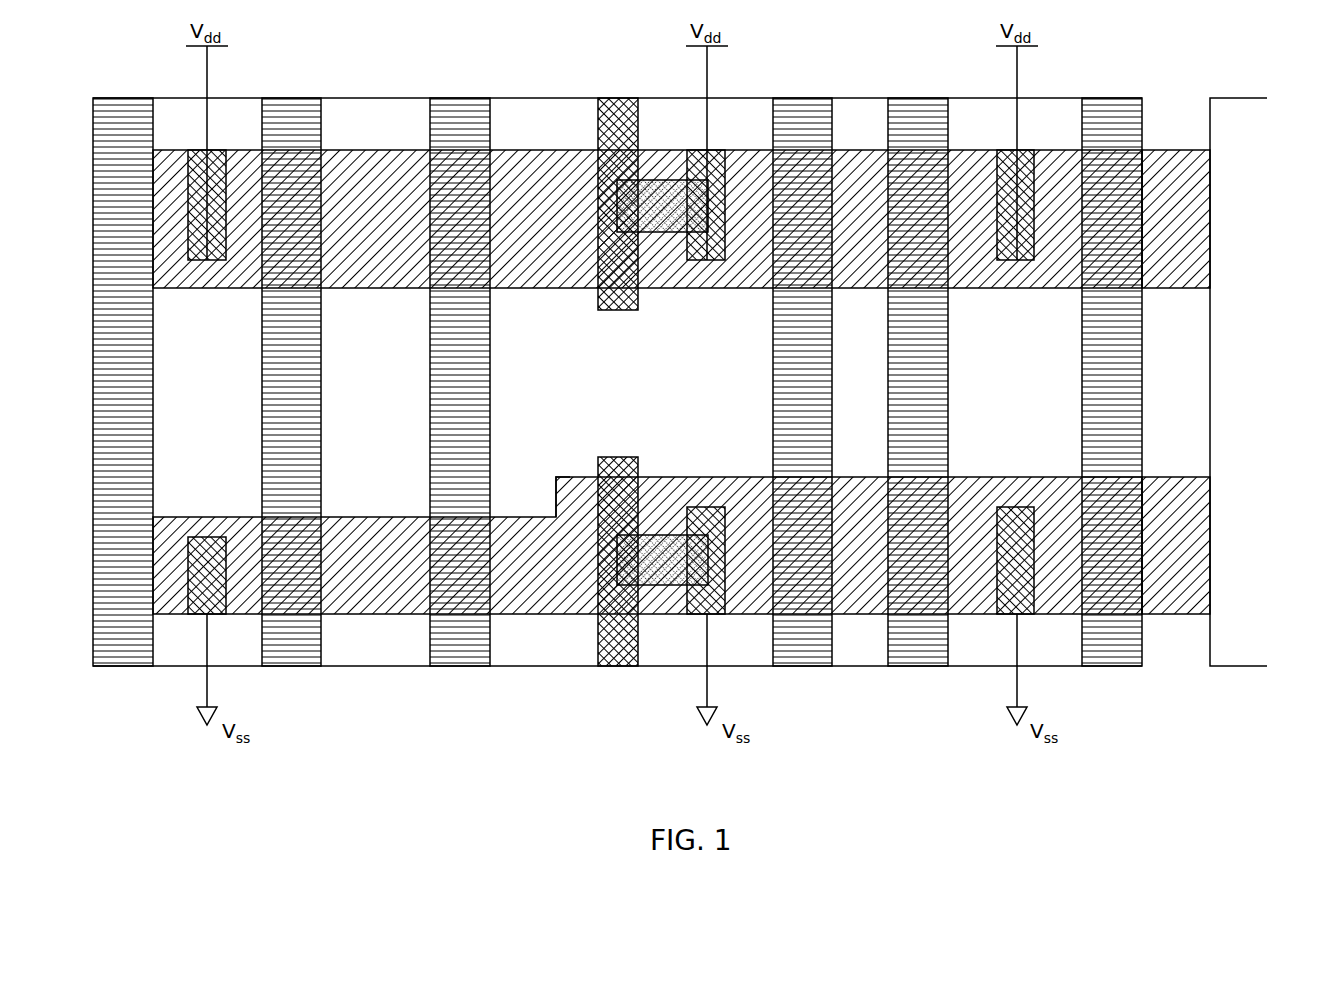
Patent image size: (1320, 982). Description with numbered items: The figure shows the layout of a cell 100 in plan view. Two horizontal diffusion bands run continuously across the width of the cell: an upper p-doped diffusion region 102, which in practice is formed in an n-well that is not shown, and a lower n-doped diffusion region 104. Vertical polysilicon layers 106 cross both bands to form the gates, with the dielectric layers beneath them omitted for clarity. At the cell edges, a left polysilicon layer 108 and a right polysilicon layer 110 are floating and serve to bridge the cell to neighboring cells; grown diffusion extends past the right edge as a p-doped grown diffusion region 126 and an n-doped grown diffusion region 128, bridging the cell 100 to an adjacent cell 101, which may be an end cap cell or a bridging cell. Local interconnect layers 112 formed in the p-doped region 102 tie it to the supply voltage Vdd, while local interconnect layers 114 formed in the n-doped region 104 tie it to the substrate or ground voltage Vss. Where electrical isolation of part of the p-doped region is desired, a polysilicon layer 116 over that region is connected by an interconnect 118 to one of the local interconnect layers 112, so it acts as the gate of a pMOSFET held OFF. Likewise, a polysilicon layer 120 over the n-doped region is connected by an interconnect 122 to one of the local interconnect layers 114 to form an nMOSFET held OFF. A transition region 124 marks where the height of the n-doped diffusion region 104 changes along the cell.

The cell 100 is at (72, 620).
The other cell 101 is at (1260, 620).
The p-doped diffusion region 102 is at (376, 148).
The n-doped diffusion region 104 is at (371, 616).
The polysilicon layers 106 is at (290, 97).
The left polysilicon layer 108 is at (122, 97).
The right polysilicon layer 110 is at (1112, 97).
The local interconnect layers 112 is at (208, 290).
The local interconnect layers 114 is at (207, 535).
The polysilicon layer 116 is at (620, 97).
The interconnect 118 is at (664, 234).
The polysilicon layer 120 is at (616, 668).
The interconnect 122 is at (661, 587).
The transition region 124 is at (554, 494).
The p-doped grown diffusion region 126 is at (1176, 149).
The n-doped grown diffusion region 128 is at (1175, 616).